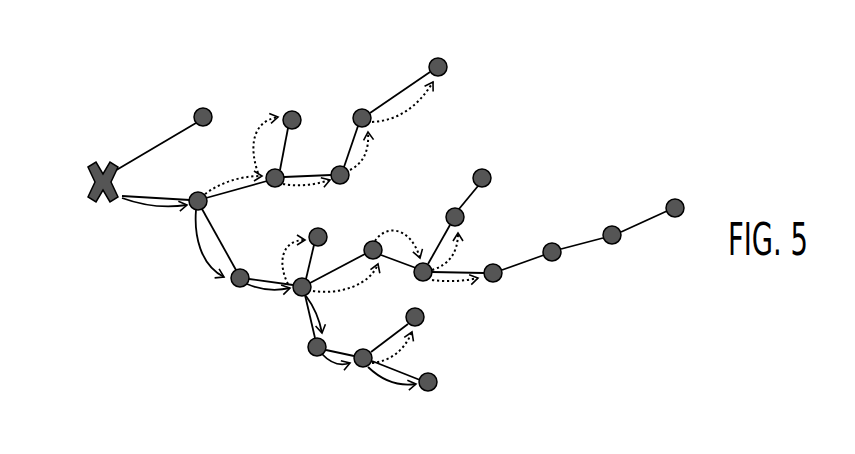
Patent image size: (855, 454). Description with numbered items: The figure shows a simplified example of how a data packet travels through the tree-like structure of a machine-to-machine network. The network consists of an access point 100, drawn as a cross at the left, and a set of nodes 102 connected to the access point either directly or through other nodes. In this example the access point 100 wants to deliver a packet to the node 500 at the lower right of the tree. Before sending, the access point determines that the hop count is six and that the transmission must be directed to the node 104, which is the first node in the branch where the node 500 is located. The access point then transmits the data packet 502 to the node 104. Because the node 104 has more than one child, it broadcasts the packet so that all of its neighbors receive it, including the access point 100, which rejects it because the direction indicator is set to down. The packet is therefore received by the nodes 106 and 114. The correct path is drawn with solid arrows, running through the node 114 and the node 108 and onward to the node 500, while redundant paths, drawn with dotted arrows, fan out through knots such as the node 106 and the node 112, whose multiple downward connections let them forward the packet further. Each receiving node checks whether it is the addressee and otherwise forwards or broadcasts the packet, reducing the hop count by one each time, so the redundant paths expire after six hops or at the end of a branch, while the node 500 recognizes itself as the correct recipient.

The access point 100 is at (82, 197).
The set of nodes 102 is at (219, 59).
The node 104 is at (187, 206).
The node 106 is at (276, 190).
The node 108 is at (288, 292).
The node 112 is at (423, 281).
The node 114 is at (222, 281).
The node 500 is at (437, 389).
The data packet 502 is at (142, 204).